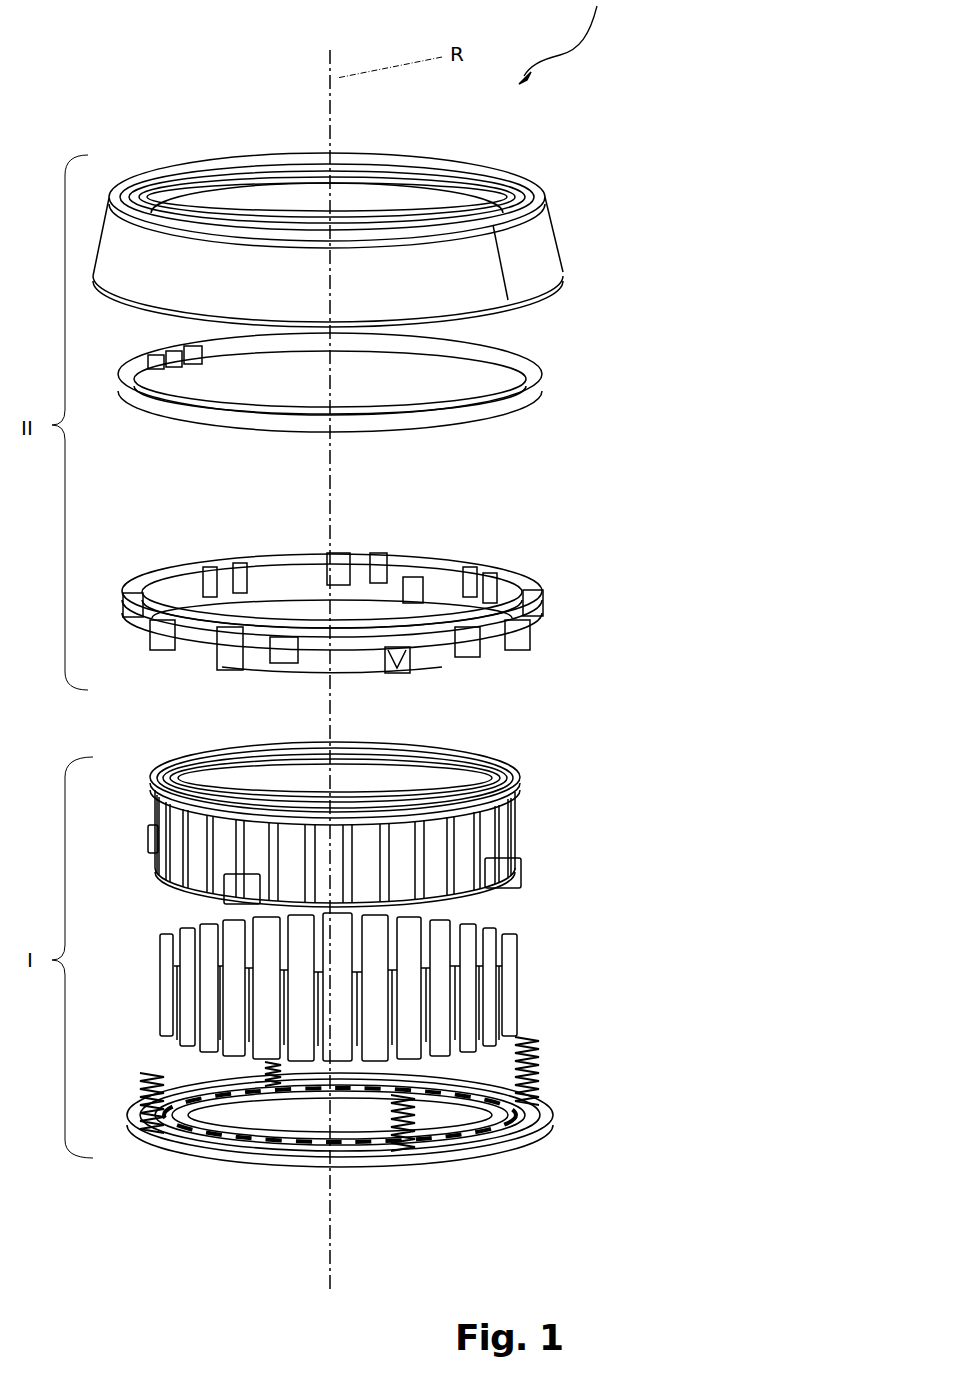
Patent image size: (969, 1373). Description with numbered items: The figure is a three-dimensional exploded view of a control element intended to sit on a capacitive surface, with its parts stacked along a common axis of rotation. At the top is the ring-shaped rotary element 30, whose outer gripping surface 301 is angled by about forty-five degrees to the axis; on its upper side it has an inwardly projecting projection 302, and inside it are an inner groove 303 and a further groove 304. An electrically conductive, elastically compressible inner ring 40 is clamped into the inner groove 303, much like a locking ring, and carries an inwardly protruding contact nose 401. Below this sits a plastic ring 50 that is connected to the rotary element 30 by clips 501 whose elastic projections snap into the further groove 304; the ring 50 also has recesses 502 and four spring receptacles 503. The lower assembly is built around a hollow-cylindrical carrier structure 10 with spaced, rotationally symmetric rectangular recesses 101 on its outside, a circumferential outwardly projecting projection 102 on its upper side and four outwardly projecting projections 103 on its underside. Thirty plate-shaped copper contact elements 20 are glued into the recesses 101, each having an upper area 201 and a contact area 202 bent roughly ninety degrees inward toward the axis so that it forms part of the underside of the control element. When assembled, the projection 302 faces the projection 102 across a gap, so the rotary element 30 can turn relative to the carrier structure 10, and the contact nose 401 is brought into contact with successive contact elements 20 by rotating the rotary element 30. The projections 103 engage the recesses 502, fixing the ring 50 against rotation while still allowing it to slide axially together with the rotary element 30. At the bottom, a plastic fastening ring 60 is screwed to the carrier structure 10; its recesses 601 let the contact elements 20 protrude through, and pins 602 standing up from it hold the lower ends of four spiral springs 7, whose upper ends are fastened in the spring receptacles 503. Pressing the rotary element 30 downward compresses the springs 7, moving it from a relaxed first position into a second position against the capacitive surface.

The rotary element 30 is at (385, 213).
The outer gripping surface 301 is at (490, 297).
The inwardly projecting projection 302 is at (513, 183).
The inner groove 303 is at (263, 173).
The further groove 304 is at (395, 185).
The inner ring 40 is at (389, 382).
The contact nose 401 is at (205, 360).
The ring 50 is at (389, 616).
The clips 501 is at (515, 633).
The recesses 502 is at (427, 590).
The spring receptacles 503 is at (445, 665).
The carrier structure 10 is at (425, 820).
The rectangular recesses 101 is at (488, 825).
The circumferential projection 102 is at (518, 772).
The radially outwardly projecting projections 103 is at (510, 873).
The contact elements 20 is at (454, 987).
The upper area 201 is at (487, 1003).
The contact area 202 is at (540, 1030).
The spiral spring 7 is at (540, 1053).
The fastening ring 60 is at (386, 1170).
The recesses 601 is at (520, 1110).
The pin 602 is at (401, 1150).